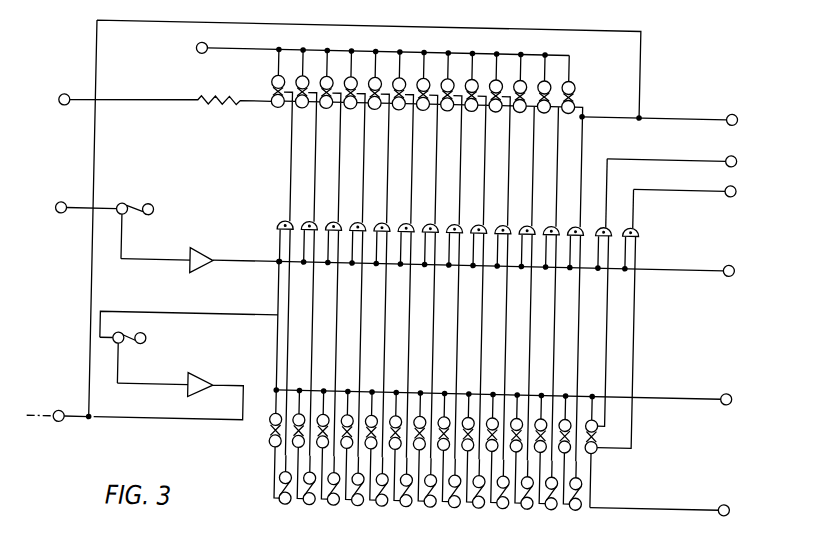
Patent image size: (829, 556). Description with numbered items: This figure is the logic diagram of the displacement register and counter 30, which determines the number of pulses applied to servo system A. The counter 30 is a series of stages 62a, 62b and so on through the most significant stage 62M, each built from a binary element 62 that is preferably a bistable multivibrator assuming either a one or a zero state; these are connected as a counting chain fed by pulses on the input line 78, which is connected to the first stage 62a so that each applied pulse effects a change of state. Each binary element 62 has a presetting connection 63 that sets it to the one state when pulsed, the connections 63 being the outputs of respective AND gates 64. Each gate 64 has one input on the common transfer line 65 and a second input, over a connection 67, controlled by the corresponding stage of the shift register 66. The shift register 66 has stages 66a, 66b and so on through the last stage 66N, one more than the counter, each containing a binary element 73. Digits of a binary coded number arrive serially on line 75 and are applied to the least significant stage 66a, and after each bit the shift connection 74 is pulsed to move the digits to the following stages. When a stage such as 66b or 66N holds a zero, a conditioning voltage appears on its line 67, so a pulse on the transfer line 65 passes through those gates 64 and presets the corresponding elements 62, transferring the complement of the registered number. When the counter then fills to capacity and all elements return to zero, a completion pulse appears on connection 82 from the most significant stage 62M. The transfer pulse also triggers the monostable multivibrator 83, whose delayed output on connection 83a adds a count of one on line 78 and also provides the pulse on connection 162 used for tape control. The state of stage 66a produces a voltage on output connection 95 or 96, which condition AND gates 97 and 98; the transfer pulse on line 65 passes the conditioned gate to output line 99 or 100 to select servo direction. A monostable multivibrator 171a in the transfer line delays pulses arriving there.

The displacement register and counter 30 is at (393, 141).
The binary elements 62 is at (515, 74).
The most significant binary stage 62M is at (270, 108).
The first stage 62a is at (565, 117).
The second stage 62b is at (540, 116).
The presetting connection 63 is at (308, 222).
The AND gate 64 is at (280, 222).
The common transfer line 65 is at (224, 265).
The shift register 66 is at (391, 490).
The last stage of shift register 66N is at (272, 435).
The least significant binary stage 66a is at (600, 436).
The shift register stage 66b is at (565, 414).
The connection 67 is at (279, 367).
The binary element 73 is at (360, 430).
The shift connection 74 is at (390, 390).
The line 75 is at (656, 503).
The input line 78 is at (597, 110).
The connection 82 is at (138, 100).
The monostable multivibrator 83 is at (115, 337).
The connection 83a is at (151, 386).
The output connection 95 is at (637, 379).
The output connection 96 is at (609, 379).
The AND gate 97 is at (639, 226).
The AND gate 98 is at (606, 221).
The output line 99 is at (632, 204).
The output line 100 is at (606, 174).
The connection 162 is at (58, 426).
The monostable multivibrator 171a is at (157, 202).